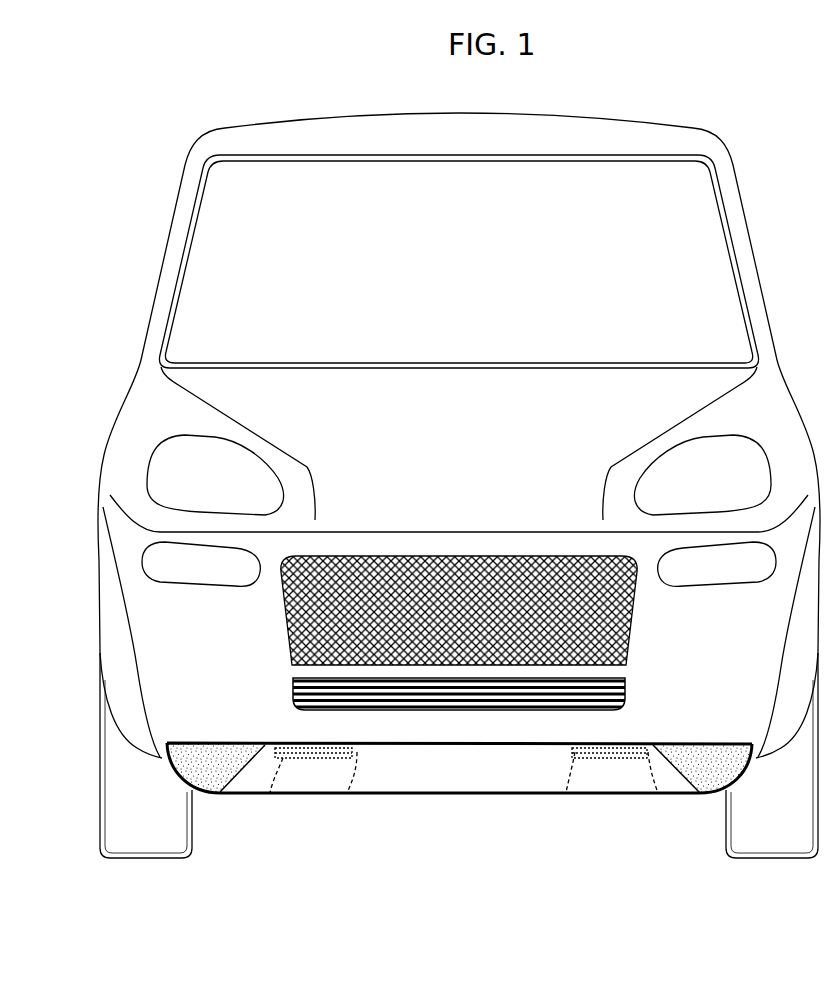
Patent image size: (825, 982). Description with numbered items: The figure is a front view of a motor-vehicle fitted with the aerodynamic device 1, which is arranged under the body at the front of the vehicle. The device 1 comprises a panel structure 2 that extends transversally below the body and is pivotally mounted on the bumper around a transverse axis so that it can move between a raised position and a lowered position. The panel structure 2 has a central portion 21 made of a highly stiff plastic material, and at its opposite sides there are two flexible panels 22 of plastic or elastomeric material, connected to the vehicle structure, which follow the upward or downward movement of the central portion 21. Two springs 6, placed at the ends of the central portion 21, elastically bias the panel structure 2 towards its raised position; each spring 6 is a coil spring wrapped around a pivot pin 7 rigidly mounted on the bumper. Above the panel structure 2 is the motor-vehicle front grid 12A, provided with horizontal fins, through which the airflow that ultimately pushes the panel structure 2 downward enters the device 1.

The aerodynamic device 1 is at (459, 504).
The panel structure 2 is at (459, 688).
The central portion 21 is at (398, 780).
The flexible panels 22 is at (207, 763).
The springs 6 is at (285, 758).
The pivot pin 7 is at (358, 757).
The motor-vehicle front grid 12A is at (625, 682).